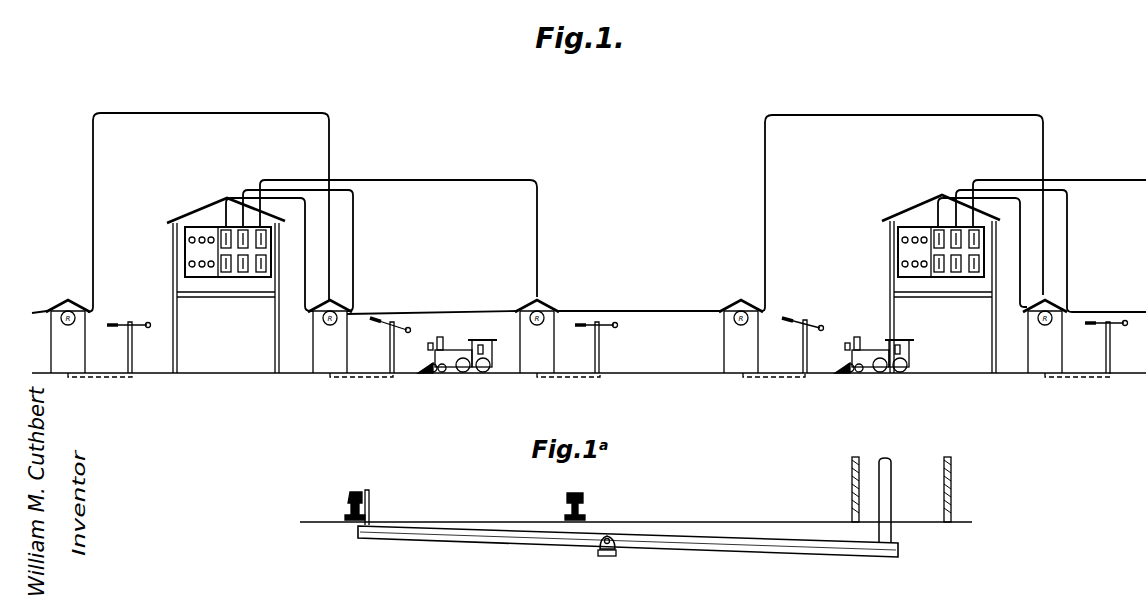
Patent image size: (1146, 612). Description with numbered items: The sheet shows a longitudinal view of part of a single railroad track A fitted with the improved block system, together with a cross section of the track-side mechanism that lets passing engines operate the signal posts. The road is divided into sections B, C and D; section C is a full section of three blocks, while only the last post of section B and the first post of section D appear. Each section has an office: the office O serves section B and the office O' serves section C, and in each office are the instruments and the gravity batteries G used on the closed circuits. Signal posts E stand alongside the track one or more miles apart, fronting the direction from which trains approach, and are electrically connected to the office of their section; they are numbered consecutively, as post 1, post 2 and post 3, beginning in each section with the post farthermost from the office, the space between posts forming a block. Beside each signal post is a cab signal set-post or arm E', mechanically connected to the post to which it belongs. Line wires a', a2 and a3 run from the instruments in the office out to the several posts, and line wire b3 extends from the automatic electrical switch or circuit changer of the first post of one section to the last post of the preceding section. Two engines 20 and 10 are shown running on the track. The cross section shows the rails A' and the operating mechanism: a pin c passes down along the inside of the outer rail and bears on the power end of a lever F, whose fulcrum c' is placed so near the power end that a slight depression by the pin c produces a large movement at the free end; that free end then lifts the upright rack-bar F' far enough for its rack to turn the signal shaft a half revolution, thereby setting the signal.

In FIG. 1, the railroad track A is at (589, 383).
In FIG. 1A, the railroad track A is at (636, 511).
In FIG. 1, the section of the road D is at (190, 212).
In FIG. 1, the section of the road B is at (932, 213).
In FIG. 1, the section of the road C is at (529, 221).
In FIG. 1, the line wire b3 is at (568, 260).
In FIG. 1, the line wire a' is at (589, 239).
In FIG. 1, the line wire a2 is at (694, 252).
In FIG. 1, the line wire a3 is at (626, 254).
In FIG. 1, the office of section C O' is at (230, 277).
In FIG. 1, the office of section B O is at (941, 277).
In FIG. 1, the gravity batteries G is at (272, 240).
In FIG. 1, the signal post E is at (556, 327).
In FIG. 1A, the signal post E is at (901, 489).
In FIG. 1, the cab signal set-post or arm E' is at (620, 345).
In FIG. 1, the post number 1 is at (432, 359).
In FIG. 1, the post number 2 is at (567, 359).
In FIG. 1, the post number 3 is at (718, 359).
In FIG. 1, the engine 20 is at (457, 355).
In FIG. 1, the engine 10 is at (874, 355).
In FIG. 1A, the rail A' is at (468, 502).
In FIG. 1A, the pin c is at (372, 504).
In FIG. 1A, the fulcrum c' is at (598, 549).
In FIG. 1A, the lever F is at (628, 547).
In FIG. 1A, the upright rack-bar F' is at (896, 500).